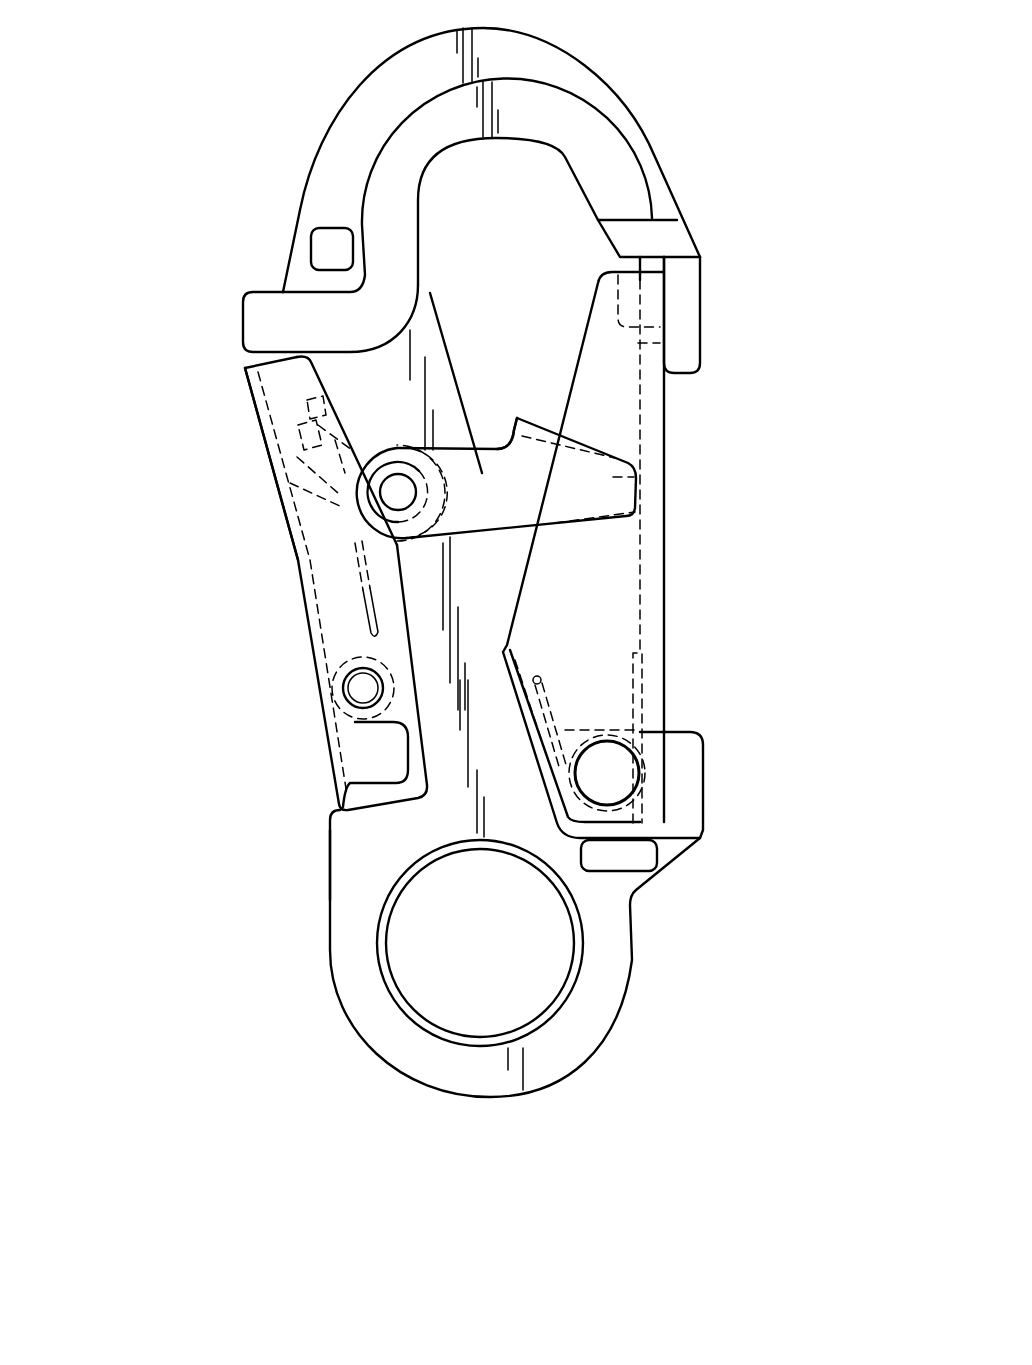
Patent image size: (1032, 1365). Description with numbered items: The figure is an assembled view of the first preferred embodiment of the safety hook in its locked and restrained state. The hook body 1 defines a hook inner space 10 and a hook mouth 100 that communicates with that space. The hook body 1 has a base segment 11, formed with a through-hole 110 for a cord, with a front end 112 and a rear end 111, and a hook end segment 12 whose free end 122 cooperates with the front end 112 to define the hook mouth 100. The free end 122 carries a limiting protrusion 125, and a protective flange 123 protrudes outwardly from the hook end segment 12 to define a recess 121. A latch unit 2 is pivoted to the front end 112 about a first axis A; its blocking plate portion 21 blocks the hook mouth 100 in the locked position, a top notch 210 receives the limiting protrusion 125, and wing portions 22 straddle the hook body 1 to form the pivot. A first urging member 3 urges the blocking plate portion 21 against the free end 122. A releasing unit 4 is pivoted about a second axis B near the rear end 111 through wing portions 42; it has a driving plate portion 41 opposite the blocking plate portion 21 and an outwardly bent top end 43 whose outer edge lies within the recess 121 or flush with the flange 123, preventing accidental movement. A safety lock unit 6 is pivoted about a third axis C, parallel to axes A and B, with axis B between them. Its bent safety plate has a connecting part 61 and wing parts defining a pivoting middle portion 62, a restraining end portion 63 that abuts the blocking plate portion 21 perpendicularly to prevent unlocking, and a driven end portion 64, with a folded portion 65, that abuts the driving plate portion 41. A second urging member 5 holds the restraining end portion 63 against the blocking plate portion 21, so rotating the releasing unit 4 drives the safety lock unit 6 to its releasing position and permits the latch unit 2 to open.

The hook mouth 100 is at (737, 543).
The hook body 1 is at (348, 1079).
The hook inner space 10 is at (532, 238).
The base segment 11 is at (314, 967).
The through-hole 110 is at (513, 962).
The rear end 111 is at (327, 861).
The front end 112 is at (665, 872).
The hook end segment 12 is at (350, 66).
The recess 121 is at (307, 368).
The free end 122 is at (702, 347).
The protective flange 123 is at (243, 330).
The limiting protrusion 125 is at (634, 267).
The latch unit 2 is at (681, 588).
The blocking plate portion 21 is at (657, 537).
The wing portions 22 is at (593, 623).
The top notch 210 is at (652, 307).
The first urging member 3 is at (640, 711).
The releasing unit 4 is at (312, 780).
The driving plate portion 41 is at (327, 745).
The wing portions 42 is at (347, 638).
The top end 43 is at (260, 407).
The second urging member 5 is at (365, 596).
The safety lock unit 6 is at (527, 392).
The connecting part 61 is at (563, 450).
The pivoting middle portion 62 is at (482, 473).
The restraining end portion 63 is at (668, 484).
The driven end portion 64 is at (293, 453).
The folded portion 65 is at (263, 427).
The first axis A is at (607, 773).
The second axis B is at (363, 688).
The third axis C is at (395, 493).